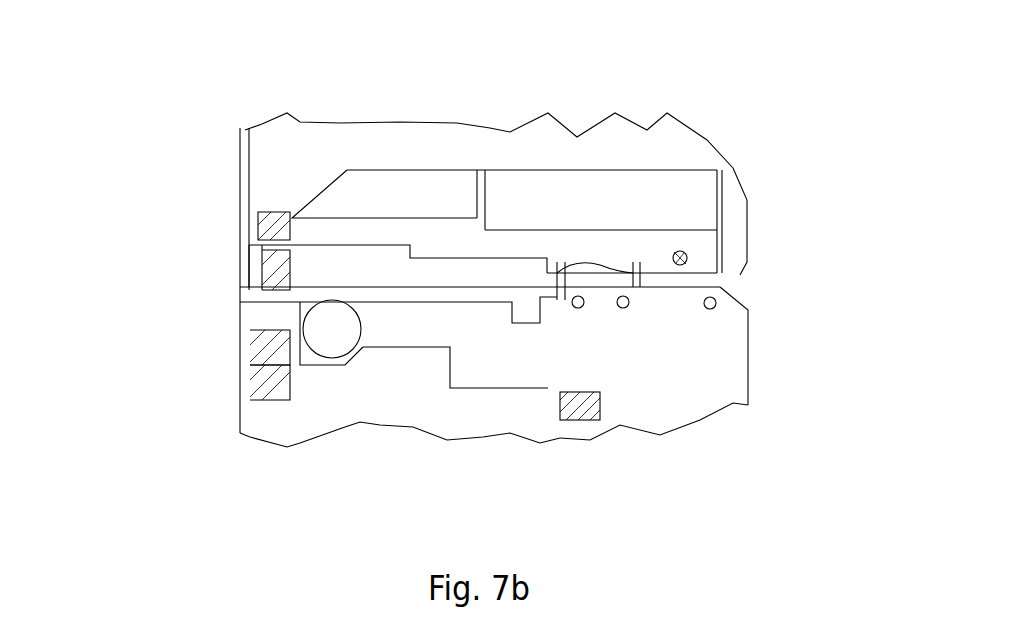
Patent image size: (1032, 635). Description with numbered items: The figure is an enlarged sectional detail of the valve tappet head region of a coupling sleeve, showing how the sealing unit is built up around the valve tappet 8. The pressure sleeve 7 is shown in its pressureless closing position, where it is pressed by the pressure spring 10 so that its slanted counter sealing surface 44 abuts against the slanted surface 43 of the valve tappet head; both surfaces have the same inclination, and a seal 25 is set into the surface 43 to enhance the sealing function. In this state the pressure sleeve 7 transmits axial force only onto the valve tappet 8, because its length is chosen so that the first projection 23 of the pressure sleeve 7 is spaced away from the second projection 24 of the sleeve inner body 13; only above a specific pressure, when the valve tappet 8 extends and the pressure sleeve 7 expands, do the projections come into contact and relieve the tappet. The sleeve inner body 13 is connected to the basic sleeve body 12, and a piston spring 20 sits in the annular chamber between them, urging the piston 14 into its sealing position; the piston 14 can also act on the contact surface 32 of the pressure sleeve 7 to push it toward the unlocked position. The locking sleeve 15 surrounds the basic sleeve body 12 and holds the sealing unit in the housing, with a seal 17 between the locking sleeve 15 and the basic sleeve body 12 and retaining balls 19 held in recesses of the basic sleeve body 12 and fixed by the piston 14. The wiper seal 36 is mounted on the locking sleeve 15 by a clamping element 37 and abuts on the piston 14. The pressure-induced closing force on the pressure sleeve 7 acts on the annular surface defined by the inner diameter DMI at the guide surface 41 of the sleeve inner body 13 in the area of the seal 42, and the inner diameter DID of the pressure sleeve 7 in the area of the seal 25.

The pressure sleeve 7 is at (705, 242).
The valve tappet 8 is at (620, 150).
The pressure spring 10 is at (728, 262).
The basic sleeve body 12 is at (697, 365).
The sleeve inner body 13 is at (717, 283).
The piston 14 is at (252, 275).
The locking sleeve 15 is at (390, 388).
The seal 17 is at (585, 398).
The retaining balls 19 is at (328, 338).
The piston spring 20 is at (710, 307).
The first projection 23 is at (635, 275).
The second projection 24 is at (577, 262).
The seal 25 is at (283, 222).
The contact surface 32 is at (412, 248).
The wiper seal 36 is at (245, 338).
The clamping element 37 is at (253, 393).
The guide surface 41 is at (747, 262).
The seal 42 is at (663, 243).
The slanted surface 43 is at (240, 215).
The counter sealing surface 44 is at (278, 243).
The inner diameter of the pressure sleeve DID is at (281, 215).
The inner diameter of the sleeve inner body DMI is at (638, 270).